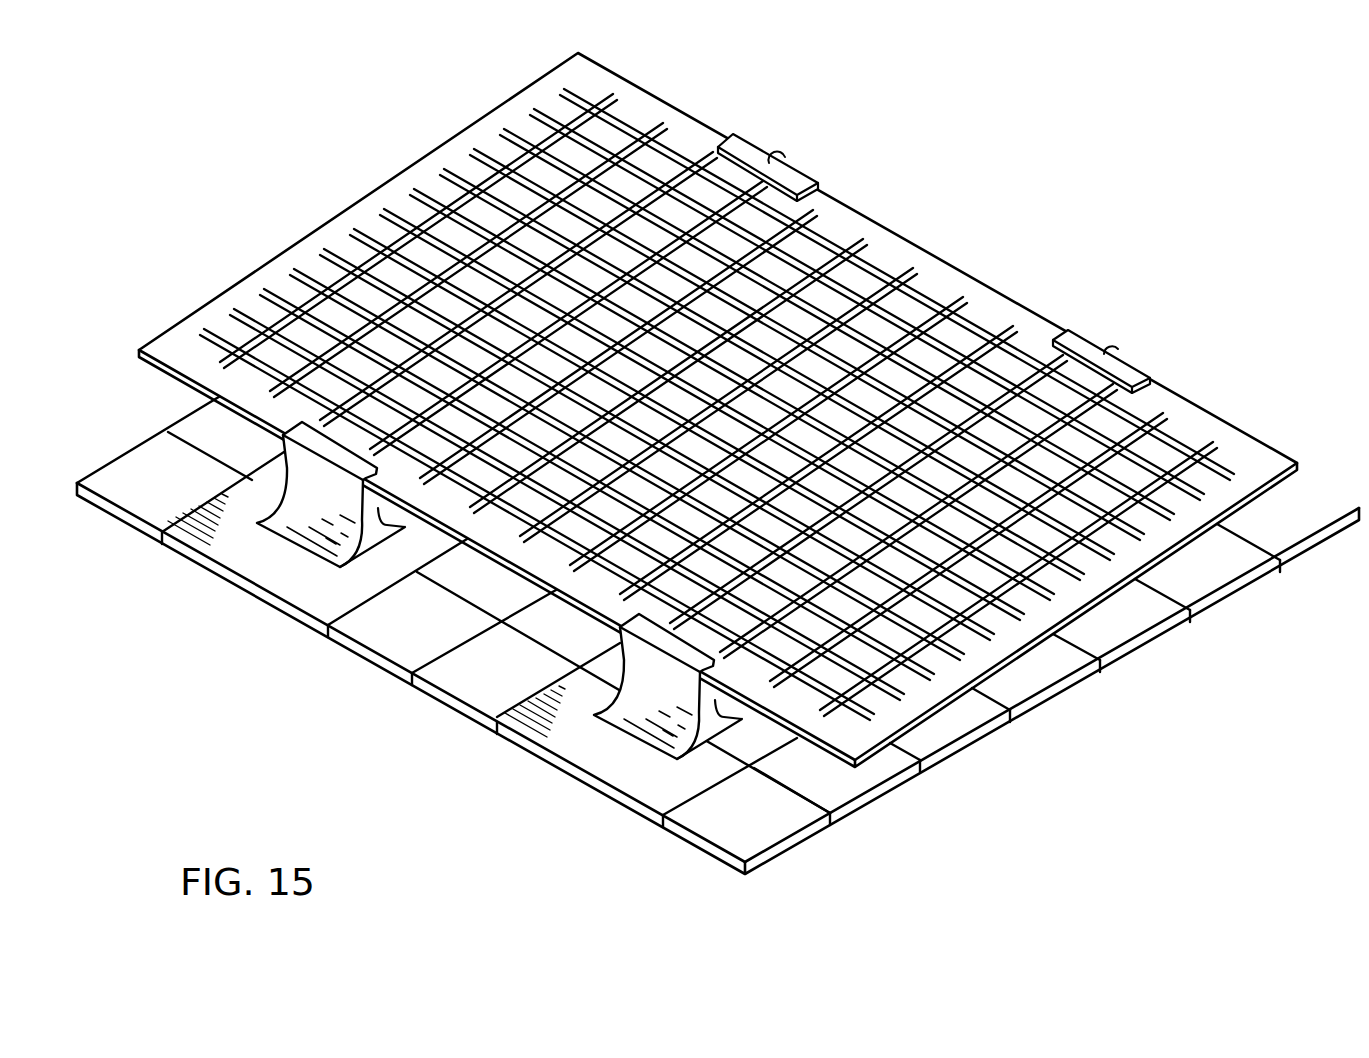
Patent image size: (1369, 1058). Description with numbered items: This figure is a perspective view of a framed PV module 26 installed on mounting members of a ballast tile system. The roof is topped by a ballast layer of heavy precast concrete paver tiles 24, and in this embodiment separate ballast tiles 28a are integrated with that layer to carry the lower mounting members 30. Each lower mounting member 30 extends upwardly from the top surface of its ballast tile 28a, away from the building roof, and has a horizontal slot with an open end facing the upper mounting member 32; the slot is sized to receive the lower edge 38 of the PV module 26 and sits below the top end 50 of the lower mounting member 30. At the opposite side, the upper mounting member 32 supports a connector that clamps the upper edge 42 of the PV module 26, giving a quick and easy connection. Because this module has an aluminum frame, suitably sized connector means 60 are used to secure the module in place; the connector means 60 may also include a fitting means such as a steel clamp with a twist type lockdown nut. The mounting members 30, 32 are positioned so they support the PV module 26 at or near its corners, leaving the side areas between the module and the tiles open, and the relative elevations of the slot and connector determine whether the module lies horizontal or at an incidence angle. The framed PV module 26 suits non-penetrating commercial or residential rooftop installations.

The concrete paver tile 24 is at (475, 676).
The ballast tile 28a is at (320, 592).
The lower edge 38 is at (482, 566).
The upper edge 42 is at (920, 247).
The PV module 26 is at (973, 322).
The upper mounting member 32 is at (793, 181).
The connector means 60 is at (1115, 345).
The lower mounting member 30 is at (686, 648).
The top end 50 is at (567, 751).